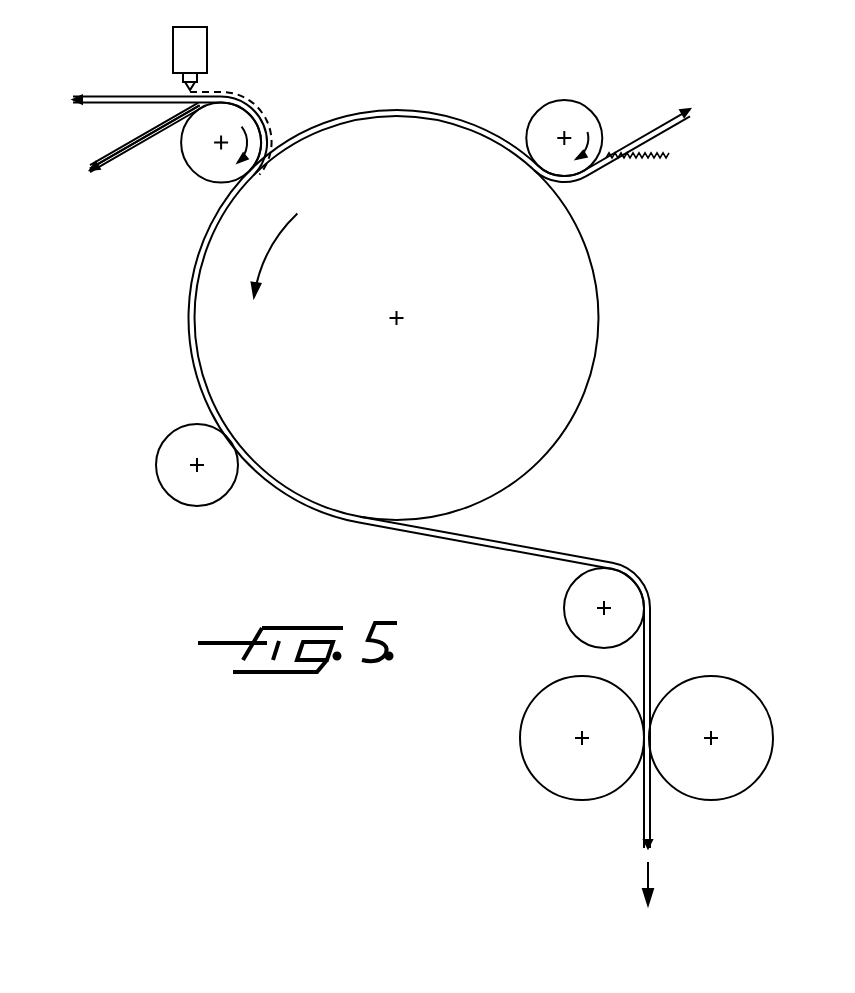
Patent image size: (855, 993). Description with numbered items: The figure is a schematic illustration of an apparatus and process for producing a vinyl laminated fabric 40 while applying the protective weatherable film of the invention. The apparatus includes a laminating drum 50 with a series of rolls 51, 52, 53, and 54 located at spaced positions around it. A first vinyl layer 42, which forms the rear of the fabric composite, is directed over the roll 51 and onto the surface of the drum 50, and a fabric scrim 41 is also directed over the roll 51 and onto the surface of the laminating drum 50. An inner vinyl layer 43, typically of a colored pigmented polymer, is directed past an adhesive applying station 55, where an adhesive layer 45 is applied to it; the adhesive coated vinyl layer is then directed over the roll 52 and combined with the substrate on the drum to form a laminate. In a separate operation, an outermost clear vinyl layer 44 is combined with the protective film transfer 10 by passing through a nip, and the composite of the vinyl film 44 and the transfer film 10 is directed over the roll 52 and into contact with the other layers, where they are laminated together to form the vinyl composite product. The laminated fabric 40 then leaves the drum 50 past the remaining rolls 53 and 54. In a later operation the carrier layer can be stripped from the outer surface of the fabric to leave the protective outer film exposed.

The protective film transfer 10 is at (129, 165).
The vinyl fabric 40 is at (562, 542).
The fabric scrim 41 is at (643, 110).
The first vinyl layer 42 is at (655, 137).
The inner vinyl layer 43 is at (132, 96).
The outermost clear vinyl layer 44 is at (113, 147).
The adhesive layer 45 is at (222, 92).
The laminating drum 50 is at (582, 290).
The roll 51 is at (545, 110).
The roll 52 is at (232, 112).
The roll 53 is at (167, 448).
The roll 54 is at (573, 610).
The adhesive applying station 55 is at (178, 48).